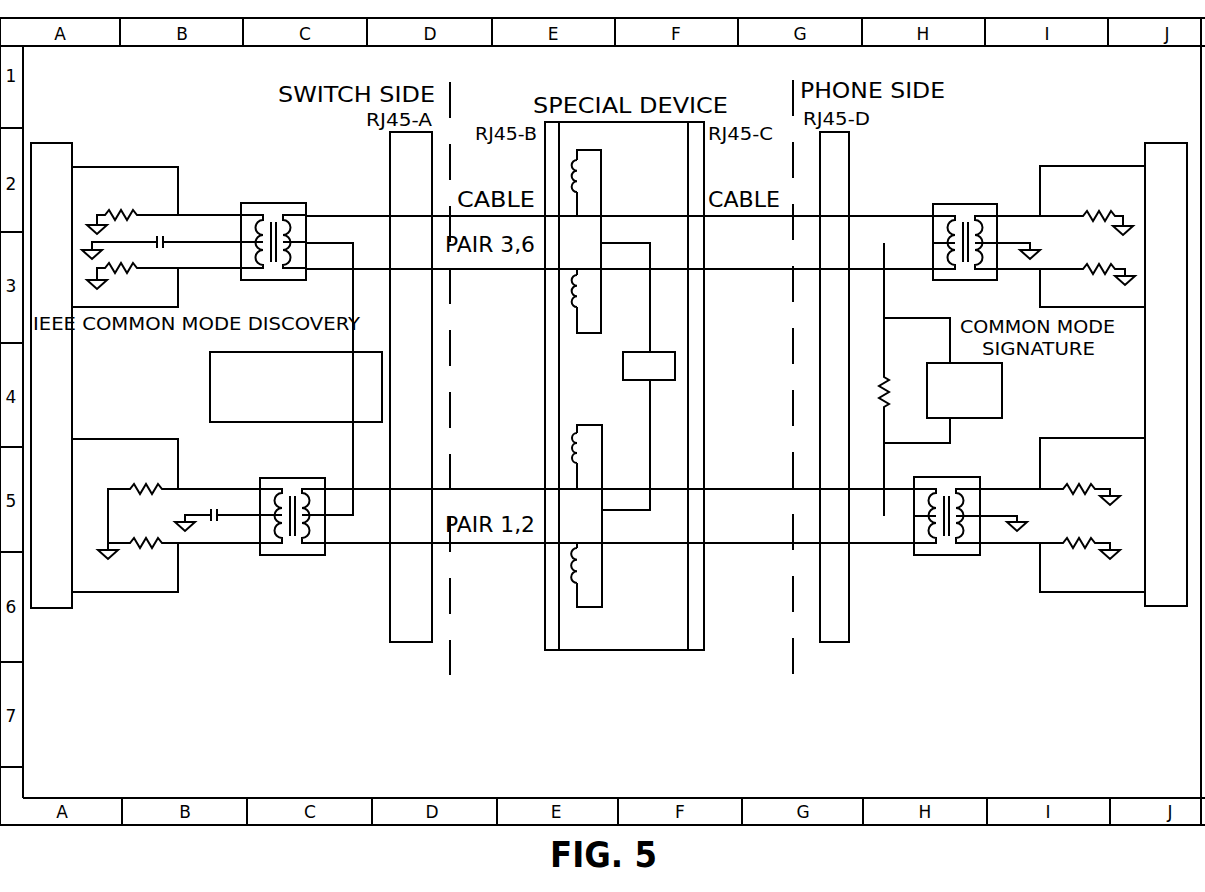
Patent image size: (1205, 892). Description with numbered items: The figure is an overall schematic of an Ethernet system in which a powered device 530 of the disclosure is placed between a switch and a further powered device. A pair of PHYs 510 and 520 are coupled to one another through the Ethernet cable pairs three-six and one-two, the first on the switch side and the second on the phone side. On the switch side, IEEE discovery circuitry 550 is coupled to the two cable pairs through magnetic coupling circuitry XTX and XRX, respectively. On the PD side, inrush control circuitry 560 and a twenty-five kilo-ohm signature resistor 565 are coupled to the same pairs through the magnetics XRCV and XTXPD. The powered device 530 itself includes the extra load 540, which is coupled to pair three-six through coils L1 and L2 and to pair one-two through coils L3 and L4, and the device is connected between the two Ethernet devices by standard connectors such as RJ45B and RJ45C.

The PHY 510 is at (72, 152).
The PHY 520 is at (1145, 143).
The powered device 530 is at (593, 652).
The extra load 540 is at (676, 366).
The IEEE discovery circuitry 550 is at (210, 381).
The inrush control circuitry 560 is at (1002, 382).
The signature resistor 565 is at (848, 420).